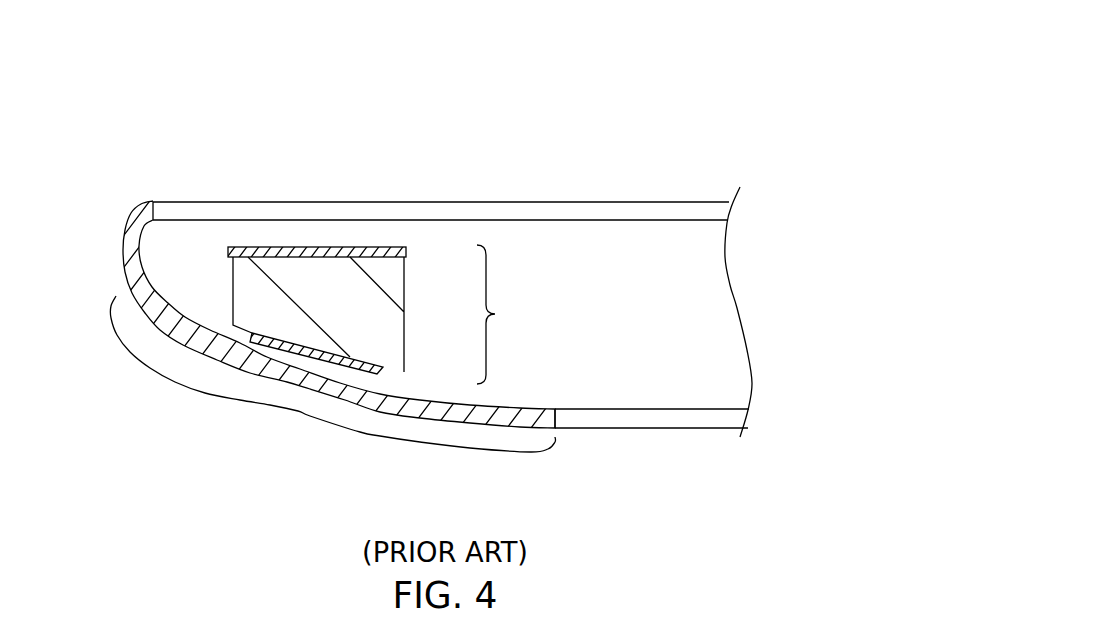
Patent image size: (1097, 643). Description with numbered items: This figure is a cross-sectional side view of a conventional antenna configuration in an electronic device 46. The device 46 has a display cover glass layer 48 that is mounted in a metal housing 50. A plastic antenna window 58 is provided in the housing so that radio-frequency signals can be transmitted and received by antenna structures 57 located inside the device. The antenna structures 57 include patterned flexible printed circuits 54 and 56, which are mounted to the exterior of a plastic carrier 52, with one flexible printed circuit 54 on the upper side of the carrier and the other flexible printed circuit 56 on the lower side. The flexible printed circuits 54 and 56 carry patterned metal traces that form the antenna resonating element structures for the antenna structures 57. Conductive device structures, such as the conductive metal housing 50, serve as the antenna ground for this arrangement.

The device 46 is at (703, 100).
The display cover glass layer 48 is at (458, 210).
The metal housing 50 is at (127, 243).
The plastic carrier 52 is at (391, 312).
The patterned flexible printed circuit 54 is at (408, 251).
The patterned flexible printed circuit 56 is at (378, 373).
The antenna structures 57 is at (502, 314).
The plastic antenna window 58 is at (298, 410).